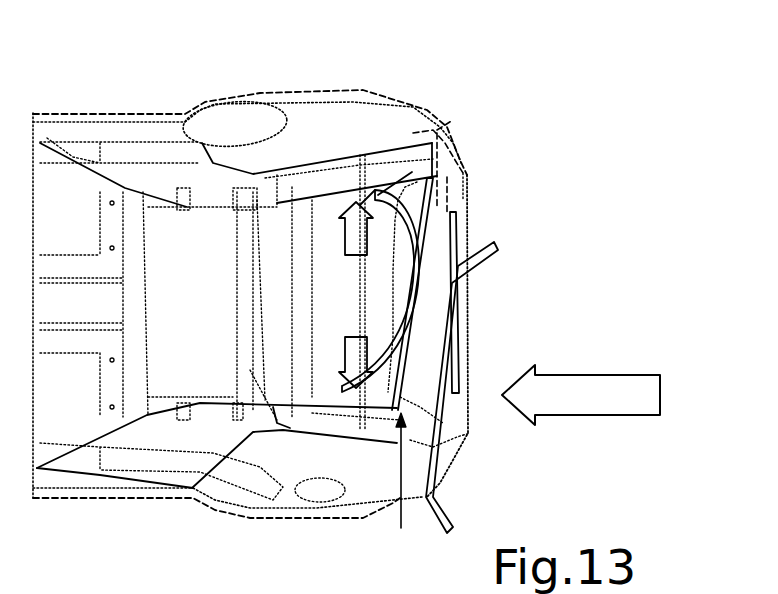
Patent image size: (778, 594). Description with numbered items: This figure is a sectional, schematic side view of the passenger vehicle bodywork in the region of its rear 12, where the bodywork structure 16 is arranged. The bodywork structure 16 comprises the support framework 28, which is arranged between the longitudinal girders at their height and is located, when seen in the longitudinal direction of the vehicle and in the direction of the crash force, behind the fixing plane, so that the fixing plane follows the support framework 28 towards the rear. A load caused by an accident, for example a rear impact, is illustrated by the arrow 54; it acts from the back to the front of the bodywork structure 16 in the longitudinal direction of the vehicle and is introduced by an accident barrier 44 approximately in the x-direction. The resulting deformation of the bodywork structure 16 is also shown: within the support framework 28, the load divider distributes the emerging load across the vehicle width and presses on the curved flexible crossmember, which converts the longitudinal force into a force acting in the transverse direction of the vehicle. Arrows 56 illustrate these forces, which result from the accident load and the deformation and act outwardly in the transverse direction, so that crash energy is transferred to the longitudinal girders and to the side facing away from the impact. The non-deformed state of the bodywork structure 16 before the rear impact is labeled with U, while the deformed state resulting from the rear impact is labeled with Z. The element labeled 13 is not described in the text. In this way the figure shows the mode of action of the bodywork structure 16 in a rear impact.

The rear 12 is at (480, 138).
The tail lamp recess 13 is at (242, 122).
The bodywork structure 16 is at (463, 93).
The support framework 28 is at (436, 298).
The accident barrier 44 is at (450, 360).
The arrow 54 is at (590, 376).
The arrows 56 is at (356, 337).
The non-deformed state U is at (467, 230).
The deformed state Z is at (398, 491).